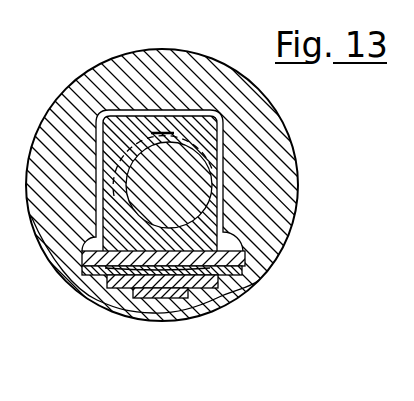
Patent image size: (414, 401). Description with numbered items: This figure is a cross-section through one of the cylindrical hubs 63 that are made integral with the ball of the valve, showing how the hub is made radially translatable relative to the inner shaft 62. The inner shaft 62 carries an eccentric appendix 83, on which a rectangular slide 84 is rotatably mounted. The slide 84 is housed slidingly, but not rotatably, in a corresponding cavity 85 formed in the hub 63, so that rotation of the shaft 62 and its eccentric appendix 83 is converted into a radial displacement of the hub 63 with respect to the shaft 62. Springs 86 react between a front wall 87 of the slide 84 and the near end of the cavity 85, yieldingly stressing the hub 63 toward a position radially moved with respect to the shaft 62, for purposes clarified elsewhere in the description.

The inner shaft 62 is at (157, 131).
The cylindrical hub 63 is at (278, 222).
The eccentric appendix 83 is at (212, 190).
The rectangular slide 84 is at (215, 128).
The cavity 85 is at (96, 179).
The springs 86 is at (255, 281).
The front wall 87 is at (232, 260).